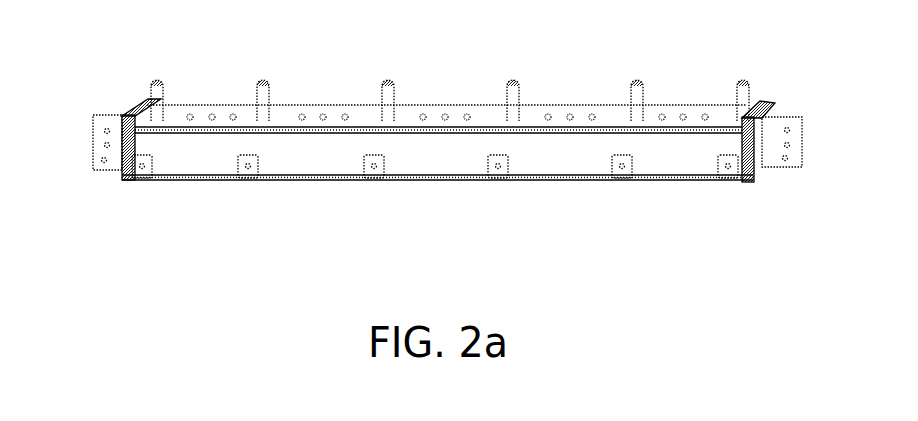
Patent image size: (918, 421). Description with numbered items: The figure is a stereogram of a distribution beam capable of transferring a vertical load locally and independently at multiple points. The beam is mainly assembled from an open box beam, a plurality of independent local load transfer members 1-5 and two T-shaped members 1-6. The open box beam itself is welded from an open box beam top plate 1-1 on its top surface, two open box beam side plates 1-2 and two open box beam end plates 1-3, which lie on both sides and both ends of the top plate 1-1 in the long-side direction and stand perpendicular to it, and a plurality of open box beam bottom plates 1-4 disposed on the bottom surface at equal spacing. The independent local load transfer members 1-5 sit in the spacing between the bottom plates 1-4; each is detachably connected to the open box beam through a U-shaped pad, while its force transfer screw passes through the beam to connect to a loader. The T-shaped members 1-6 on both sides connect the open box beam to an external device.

The open box beam top plate 1-1 is at (448, 103).
The open box beam side plates 1-2 is at (437, 157).
The open box beam end plates 1-3 is at (147, 108).
The open box beam bottom plates 1-4 is at (198, 180).
The independent local load transfer members 1-5 is at (148, 180).
The T-shaped members 1-6 is at (98, 170).